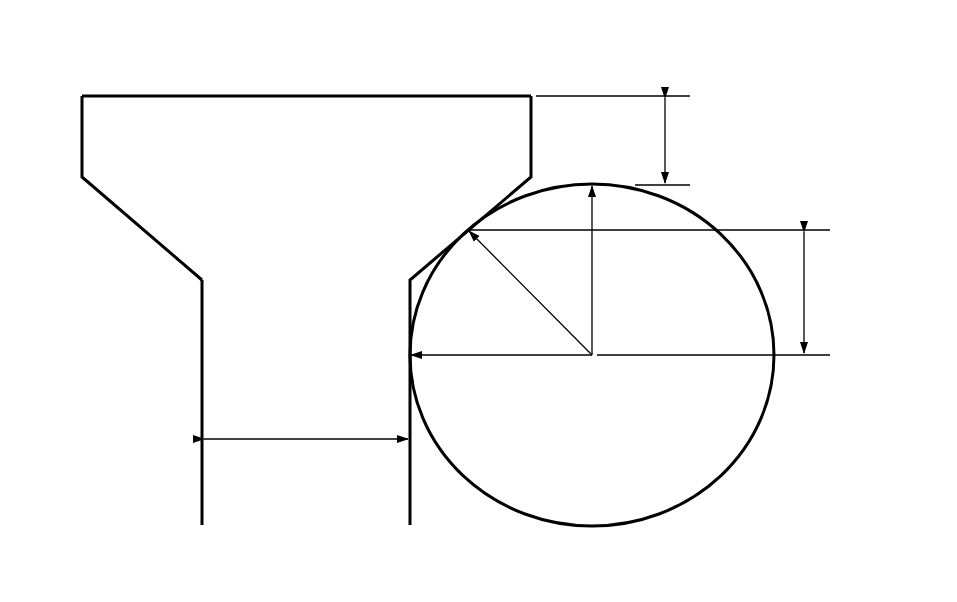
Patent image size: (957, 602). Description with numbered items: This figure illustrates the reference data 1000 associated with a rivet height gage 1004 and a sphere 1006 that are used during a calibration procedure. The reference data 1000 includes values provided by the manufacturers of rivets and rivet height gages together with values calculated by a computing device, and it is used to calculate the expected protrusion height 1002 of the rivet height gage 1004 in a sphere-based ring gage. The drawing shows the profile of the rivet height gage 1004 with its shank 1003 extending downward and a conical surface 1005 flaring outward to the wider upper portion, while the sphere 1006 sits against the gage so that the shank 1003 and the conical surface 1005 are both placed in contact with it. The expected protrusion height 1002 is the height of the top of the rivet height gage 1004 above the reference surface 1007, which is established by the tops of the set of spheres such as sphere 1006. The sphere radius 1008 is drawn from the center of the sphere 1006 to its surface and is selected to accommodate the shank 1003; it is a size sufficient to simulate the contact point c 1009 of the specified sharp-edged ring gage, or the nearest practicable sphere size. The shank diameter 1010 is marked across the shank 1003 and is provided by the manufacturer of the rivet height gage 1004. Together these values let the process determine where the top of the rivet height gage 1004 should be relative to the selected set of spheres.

The reference data 1000 is at (255, 62).
The expected protrusion height 1002 is at (670, 140).
The shank 1003 is at (201, 360).
The rivet height gage 1004 is at (468, 95).
The conical surface 1005 is at (140, 227).
The sphere 1006 is at (705, 216).
The reference surface 1007 is at (640, 184).
The sphere radius 1008 is at (596, 294).
The contact point c 1009 is at (807, 272).
The shank diameter 1010 is at (294, 443).